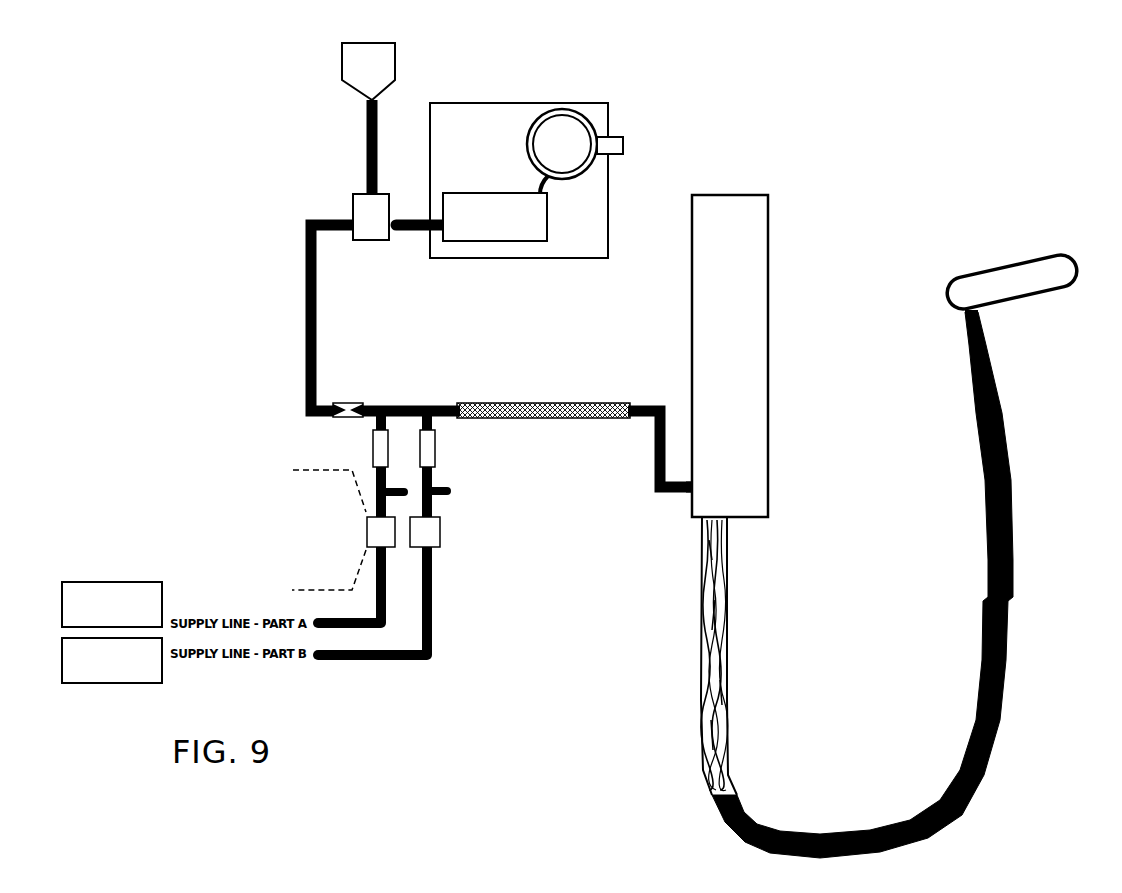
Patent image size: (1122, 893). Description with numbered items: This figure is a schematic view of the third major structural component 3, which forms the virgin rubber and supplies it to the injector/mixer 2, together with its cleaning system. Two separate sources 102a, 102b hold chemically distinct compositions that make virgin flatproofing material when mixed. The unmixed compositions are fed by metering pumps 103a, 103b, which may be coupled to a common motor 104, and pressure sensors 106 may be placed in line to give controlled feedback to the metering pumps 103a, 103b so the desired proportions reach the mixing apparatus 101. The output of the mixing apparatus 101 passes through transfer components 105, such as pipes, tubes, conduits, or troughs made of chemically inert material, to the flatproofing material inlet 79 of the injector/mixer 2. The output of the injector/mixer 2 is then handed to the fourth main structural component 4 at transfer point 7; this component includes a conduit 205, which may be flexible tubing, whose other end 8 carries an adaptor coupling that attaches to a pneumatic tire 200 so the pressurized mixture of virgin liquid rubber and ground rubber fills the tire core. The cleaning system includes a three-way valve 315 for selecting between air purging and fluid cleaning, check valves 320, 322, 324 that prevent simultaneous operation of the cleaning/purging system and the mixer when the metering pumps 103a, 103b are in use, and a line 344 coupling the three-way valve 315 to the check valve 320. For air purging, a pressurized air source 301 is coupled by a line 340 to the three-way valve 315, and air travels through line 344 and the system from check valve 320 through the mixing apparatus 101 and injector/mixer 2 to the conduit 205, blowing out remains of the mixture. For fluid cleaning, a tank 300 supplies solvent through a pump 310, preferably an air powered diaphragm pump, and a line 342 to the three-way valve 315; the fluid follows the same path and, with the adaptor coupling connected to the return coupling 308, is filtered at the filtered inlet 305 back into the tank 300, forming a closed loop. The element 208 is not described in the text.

The injector/mixer 2 is at (719, 380).
The third major structural component 3 is at (185, 301).
The fourth main structural component 4 is at (927, 694).
The transfer point 7 is at (729, 526).
The other end of the conduit 8 is at (904, 534).
The flatproofing material inlet 79 is at (685, 495).
The mixing apparatus 101 is at (585, 403).
The source of flatproofing composition 102a is at (83, 590).
The source of flatproofing composition 102b is at (90, 672).
The metering pump 103a is at (380, 528).
The metering pump 103b is at (425, 528).
The common motor 104 is at (329, 530).
The transfer components 105 is at (668, 405).
The pressure sensors 106 is at (447, 490).
The pneumatic tire 200 is at (1055, 255).
The conduit 205 is at (738, 808).
The cuff connection 208 is at (962, 318).
The cleaning tank 300 is at (503, 103).
The pressurized air source 301 is at (350, 55).
The filtered inlet 305 is at (586, 116).
The return coupling 308 is at (621, 137).
The pump 310 is at (500, 240).
The three-way valve 315 is at (350, 205).
The check valve 320 is at (348, 404).
The check valve 322 is at (383, 442).
The check valve 324 is at (428, 440).
The line 340 is at (366, 116).
The line 342 is at (415, 232).
The line 344 is at (305, 285).